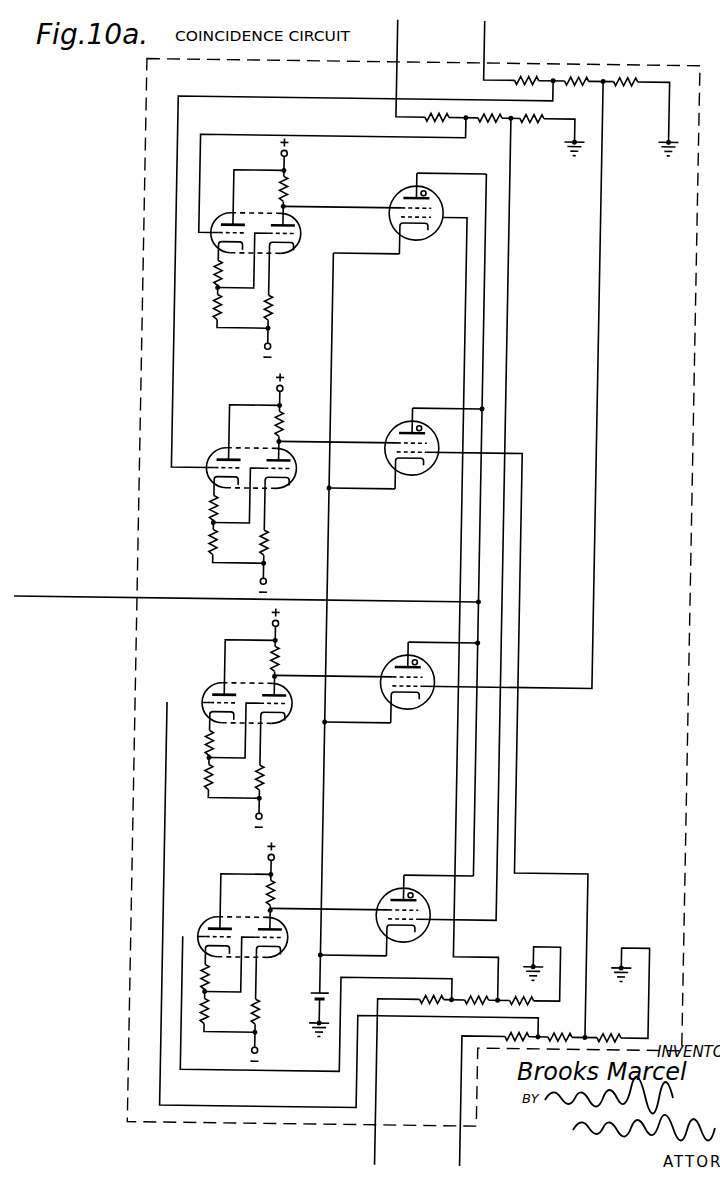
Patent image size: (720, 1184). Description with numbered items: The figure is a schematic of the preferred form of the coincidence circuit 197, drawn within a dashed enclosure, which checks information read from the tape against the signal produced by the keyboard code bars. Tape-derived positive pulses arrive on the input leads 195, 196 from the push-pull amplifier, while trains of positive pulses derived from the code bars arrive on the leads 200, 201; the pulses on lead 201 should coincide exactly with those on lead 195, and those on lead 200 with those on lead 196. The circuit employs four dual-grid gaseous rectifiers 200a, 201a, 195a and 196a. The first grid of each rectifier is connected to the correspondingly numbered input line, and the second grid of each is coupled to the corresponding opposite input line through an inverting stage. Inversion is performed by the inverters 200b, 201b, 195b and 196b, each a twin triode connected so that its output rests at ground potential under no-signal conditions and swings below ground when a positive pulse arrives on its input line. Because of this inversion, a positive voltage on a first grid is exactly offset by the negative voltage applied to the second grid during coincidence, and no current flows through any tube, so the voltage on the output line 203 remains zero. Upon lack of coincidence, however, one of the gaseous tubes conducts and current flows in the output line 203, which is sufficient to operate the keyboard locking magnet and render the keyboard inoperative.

The coincidence circuit 197 is at (137, 142).
The output lead 195 is at (446, 1055).
The output lead 196 is at (532, 1056).
The lead 200 is at (562, 88).
The lead 201 is at (473, 87).
The output line 203 is at (77, 603).
The dual-grid gaseous rectifier 195a is at (396, 191).
The inverter 195b is at (295, 233).
The dual-grid gaseous rectifier 196a is at (392, 426).
The inverter 196b is at (206, 462).
The dual-grid gaseous rectifier 200a is at (390, 664).
The inverter 200b is at (204, 696).
The dual-grid gaseous rectifier 201a is at (389, 897).
The inverter 201b is at (205, 928).